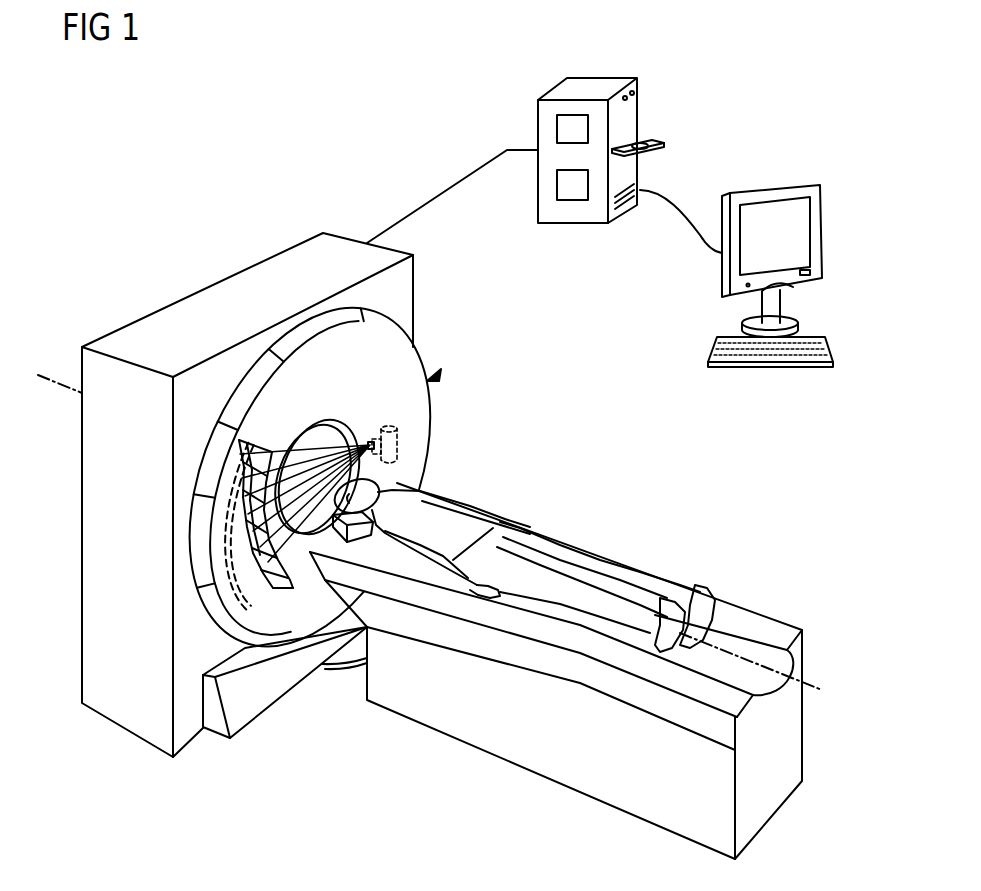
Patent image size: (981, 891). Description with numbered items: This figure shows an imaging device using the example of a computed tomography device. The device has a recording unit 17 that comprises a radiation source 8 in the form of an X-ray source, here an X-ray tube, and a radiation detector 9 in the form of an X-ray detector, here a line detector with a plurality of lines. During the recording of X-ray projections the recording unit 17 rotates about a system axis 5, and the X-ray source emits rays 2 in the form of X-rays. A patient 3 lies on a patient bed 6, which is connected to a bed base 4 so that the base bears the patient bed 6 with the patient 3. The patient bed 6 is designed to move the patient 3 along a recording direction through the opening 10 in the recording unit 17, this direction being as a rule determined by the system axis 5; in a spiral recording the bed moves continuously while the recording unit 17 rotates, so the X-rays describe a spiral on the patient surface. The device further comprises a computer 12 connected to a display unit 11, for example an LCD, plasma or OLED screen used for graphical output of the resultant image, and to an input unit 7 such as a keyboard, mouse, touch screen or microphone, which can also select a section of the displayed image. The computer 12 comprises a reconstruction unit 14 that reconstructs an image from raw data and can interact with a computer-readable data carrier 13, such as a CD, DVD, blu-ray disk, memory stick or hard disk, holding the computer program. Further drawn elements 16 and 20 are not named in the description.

The rays 2 is at (343, 437).
The patient 3 is at (450, 521).
The bed base 4 is at (522, 750).
The system axis 5 is at (828, 690).
The patient bed 6 is at (772, 627).
The input unit 7 is at (768, 367).
The radiation source 8 is at (398, 440).
The radiation detector 9 is at (268, 596).
The opening 10 is at (310, 440).
The display unit 11 is at (765, 190).
The computer 12 is at (592, 85).
The computer-readable data carrier 13 is at (648, 140).
The reconstruction unit 14 is at (557, 128).
The memory 16 is at (572, 202).
The recording unit 17 is at (434, 376).
The data line 20 is at (420, 206).